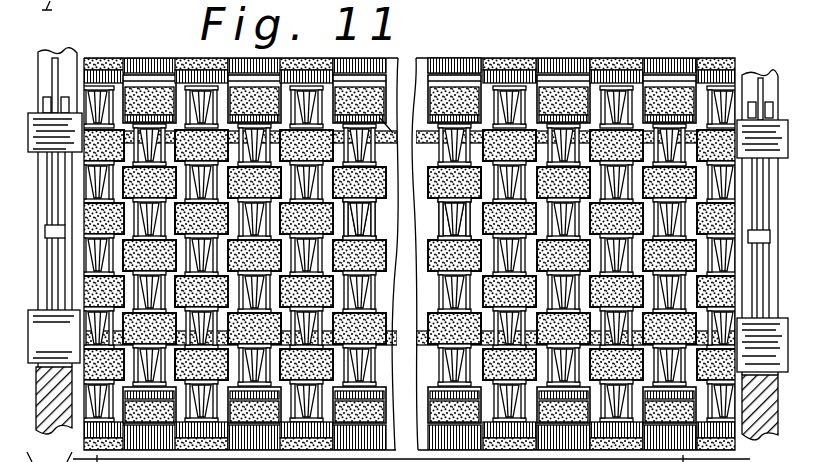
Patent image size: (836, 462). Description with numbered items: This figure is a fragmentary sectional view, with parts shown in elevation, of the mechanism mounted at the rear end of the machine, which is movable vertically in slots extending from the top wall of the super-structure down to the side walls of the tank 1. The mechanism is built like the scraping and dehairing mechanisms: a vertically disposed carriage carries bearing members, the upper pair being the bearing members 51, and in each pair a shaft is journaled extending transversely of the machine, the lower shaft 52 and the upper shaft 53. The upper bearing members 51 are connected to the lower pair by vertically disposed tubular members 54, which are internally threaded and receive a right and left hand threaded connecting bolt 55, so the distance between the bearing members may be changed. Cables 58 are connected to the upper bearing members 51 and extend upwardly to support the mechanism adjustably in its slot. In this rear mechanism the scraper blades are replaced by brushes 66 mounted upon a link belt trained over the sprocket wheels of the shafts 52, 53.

The tank 1 is at (35, 405).
The upper bearing members 51 is at (44, 128).
The lower shaft 52 is at (412, 334).
The upper shaft 53 is at (408, 60).
The tubular members 54 is at (46, 187).
The connecting bolt 55 is at (47, 233).
The cables 58 is at (54, 336).
The brushes 66 is at (472, 68).